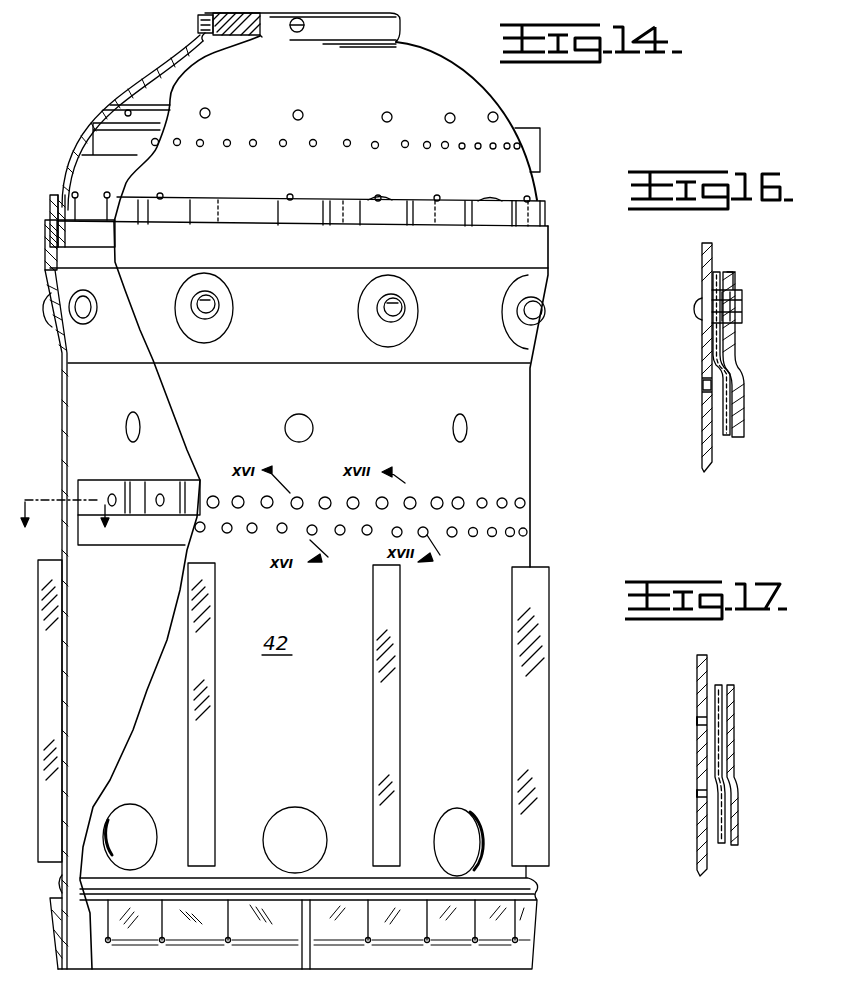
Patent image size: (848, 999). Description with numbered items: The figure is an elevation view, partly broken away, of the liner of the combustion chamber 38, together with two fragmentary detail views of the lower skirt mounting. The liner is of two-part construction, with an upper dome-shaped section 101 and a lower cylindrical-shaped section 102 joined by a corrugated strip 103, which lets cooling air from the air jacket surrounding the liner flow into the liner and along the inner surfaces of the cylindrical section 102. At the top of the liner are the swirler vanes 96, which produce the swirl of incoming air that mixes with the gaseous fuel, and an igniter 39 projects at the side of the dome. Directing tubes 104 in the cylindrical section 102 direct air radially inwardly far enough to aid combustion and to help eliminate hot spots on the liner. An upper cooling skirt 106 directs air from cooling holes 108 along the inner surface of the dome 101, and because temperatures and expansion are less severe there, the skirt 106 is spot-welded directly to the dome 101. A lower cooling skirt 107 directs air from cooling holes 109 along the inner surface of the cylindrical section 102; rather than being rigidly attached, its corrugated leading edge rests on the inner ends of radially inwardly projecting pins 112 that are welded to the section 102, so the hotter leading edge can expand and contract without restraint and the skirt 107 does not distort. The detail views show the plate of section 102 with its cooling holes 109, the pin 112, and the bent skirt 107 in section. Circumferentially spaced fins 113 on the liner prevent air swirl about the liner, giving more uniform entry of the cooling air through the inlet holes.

In FIG. 14, the combustion chamber 38 is at (145, 86).
In FIG. 14, the igniter 39 is at (541, 135).
In FIG. 14, the swirler vanes 96 is at (204, 46).
In FIG. 14, the upper dome-shaped section 101 is at (474, 90).
In FIG. 14, the lower cylindrical-shaped section 102 is at (530, 410).
In FIG. 16, the lower cylindrical-shaped section 102 is at (703, 463).
In FIG. 17, the lower cylindrical-shaped section 102 is at (698, 860).
In FIG. 14, the corrugated strip 103 is at (542, 210).
In FIG. 14, the directing tubes 104 is at (403, 305).
In FIG. 14, the upper cooling skirt 106 is at (133, 150).
In FIG. 14, the lower cooling skirt 107 is at (150, 547).
In FIG. 16, the lower cooling skirt 107 is at (740, 440).
In FIG. 17, the lower cooling skirt 107 is at (738, 818).
In FIG. 14, the cooling holes 108 is at (373, 150).
In FIG. 14, the cooling holes 109 is at (267, 508).
In FIG. 16, the cooling holes 109 is at (705, 390).
In FIG. 17, the cooling holes 109 is at (697, 793).
In FIG. 16, the pins 112 is at (742, 302).
In FIG. 14, the fins 113 is at (546, 590).